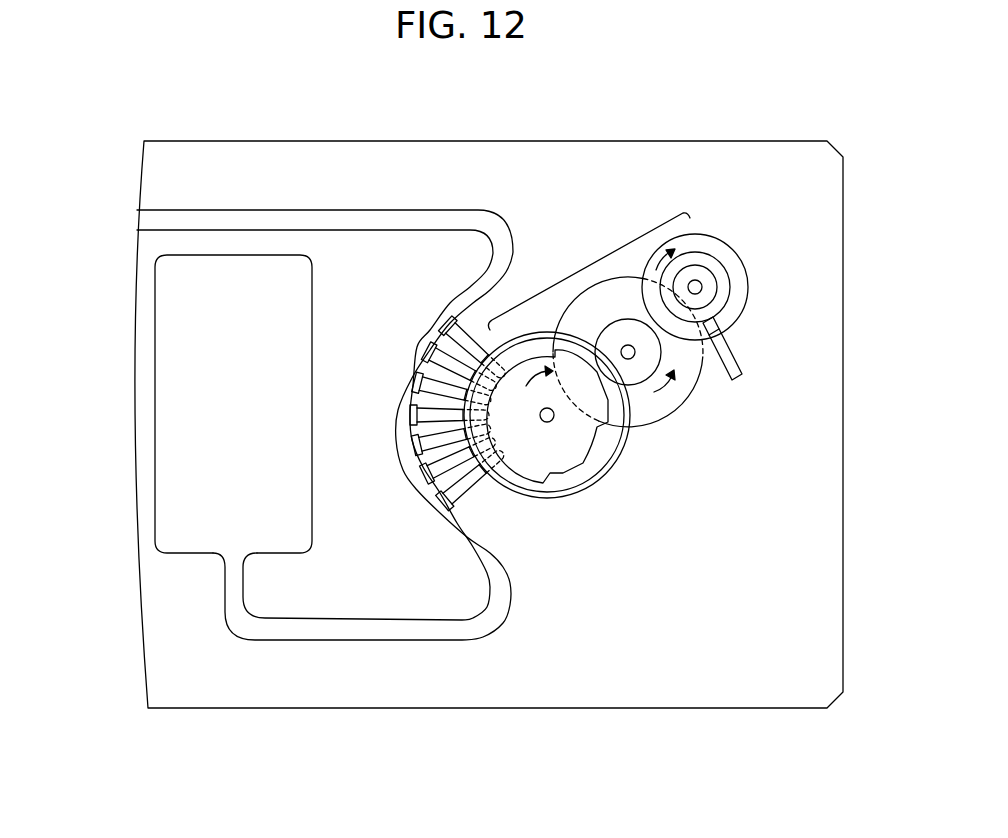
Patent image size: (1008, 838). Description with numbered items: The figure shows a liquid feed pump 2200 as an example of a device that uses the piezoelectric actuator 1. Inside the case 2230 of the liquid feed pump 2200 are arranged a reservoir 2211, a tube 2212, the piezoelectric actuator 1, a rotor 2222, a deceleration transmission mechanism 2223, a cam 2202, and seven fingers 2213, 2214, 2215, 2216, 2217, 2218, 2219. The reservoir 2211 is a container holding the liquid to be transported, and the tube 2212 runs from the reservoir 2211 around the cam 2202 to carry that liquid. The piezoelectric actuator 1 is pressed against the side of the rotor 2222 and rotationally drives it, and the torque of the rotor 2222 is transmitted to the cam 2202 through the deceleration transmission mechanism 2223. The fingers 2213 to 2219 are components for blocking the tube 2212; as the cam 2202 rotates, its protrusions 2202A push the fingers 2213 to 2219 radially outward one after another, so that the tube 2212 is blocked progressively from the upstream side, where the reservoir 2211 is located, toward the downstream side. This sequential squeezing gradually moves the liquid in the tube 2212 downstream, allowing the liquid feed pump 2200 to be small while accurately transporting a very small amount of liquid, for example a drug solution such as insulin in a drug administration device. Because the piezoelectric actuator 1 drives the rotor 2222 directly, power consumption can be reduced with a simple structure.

The liquid feed pump 2200 is at (662, 114).
The case 2230 is at (628, 710).
The reservoir 2211 is at (172, 313).
The tube 2212 is at (403, 633).
The cam 2202 is at (592, 448).
The protrusions 2202A is at (543, 484).
The rotor 2222 is at (708, 258).
The deceleration transmission mechanism 2223 is at (587, 254).
The piezoelectric actuator 1 is at (723, 373).
The finger 2213 is at (468, 482).
The finger 2214 is at (437, 470).
The finger 2215 is at (422, 447).
The finger 2216 is at (418, 413).
The finger 2217 is at (402, 380).
The finger 2218 is at (418, 350).
The finger 2219 is at (467, 335).